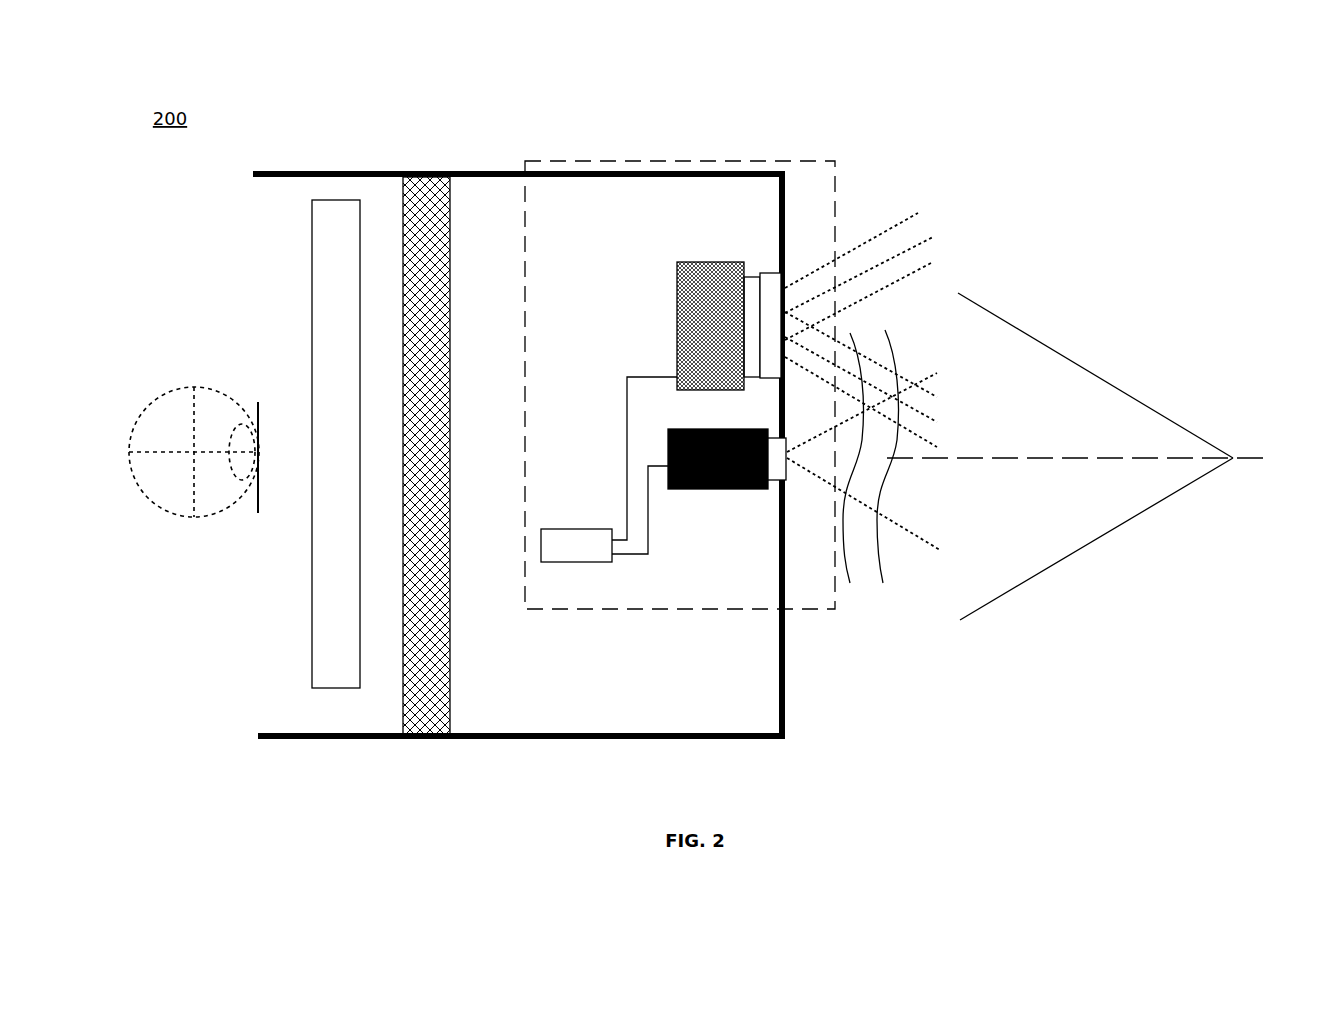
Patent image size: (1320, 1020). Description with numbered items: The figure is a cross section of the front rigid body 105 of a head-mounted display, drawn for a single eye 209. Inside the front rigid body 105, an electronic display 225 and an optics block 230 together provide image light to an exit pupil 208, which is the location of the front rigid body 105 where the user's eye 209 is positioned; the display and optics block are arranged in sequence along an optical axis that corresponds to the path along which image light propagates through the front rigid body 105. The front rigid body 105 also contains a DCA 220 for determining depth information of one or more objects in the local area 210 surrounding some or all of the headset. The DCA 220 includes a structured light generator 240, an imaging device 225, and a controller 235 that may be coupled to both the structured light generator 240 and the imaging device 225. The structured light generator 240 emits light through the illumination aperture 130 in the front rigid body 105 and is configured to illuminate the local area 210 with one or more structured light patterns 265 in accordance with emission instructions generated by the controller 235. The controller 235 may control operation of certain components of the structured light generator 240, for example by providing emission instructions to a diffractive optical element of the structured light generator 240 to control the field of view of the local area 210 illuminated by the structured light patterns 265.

The front rigid body 105 is at (750, 739).
The optics block 230 is at (350, 690).
The electronic display 225 is at (835, 638).
The DCA 220 is at (557, 160).
The controller 235 is at (552, 562).
The structured light generator 240 is at (712, 262).
The illumination aperture 130 is at (773, 273).
The structured light pattern 265 is at (920, 232).
The local area 210 is at (1083, 548).
The exit pupil 208 is at (258, 400).
The eye 209 is at (160, 507).